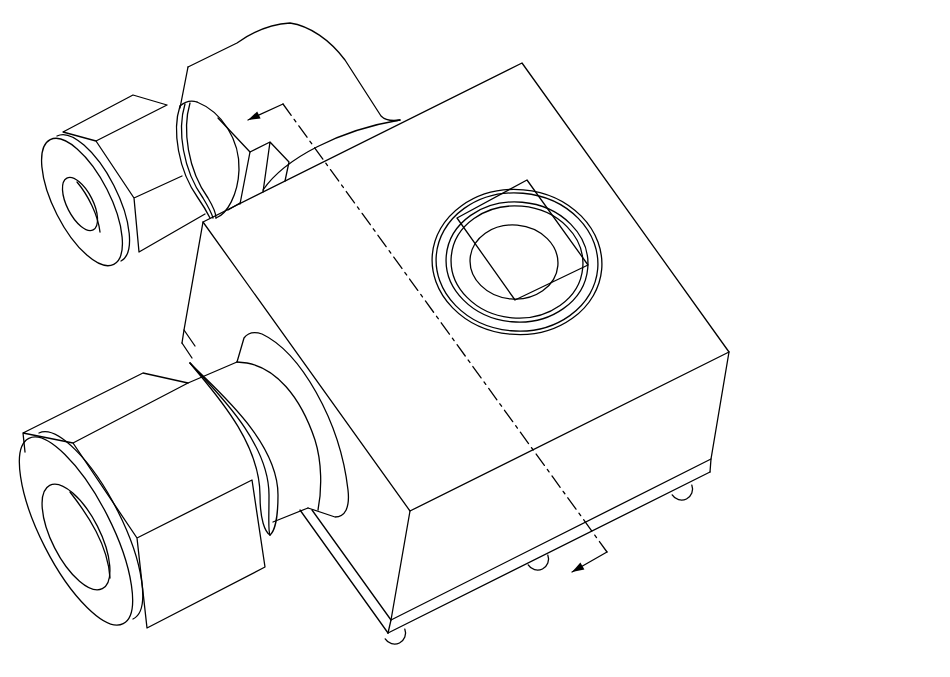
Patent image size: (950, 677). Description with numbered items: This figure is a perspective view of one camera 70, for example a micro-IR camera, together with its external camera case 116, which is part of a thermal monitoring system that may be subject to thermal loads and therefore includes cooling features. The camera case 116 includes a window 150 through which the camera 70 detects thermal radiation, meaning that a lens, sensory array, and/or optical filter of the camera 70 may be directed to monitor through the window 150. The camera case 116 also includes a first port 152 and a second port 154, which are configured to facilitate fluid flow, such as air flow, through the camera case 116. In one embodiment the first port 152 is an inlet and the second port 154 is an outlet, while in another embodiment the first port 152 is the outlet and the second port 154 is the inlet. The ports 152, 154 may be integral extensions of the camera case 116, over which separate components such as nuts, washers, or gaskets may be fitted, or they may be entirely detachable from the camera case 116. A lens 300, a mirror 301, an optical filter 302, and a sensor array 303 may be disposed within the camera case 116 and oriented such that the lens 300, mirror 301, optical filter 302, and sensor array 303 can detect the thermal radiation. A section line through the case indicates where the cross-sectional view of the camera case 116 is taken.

The camera 70 is at (496, 40).
The camera case 116 is at (538, 110).
The window 150 is at (543, 249).
The first port 152 is at (253, 53).
The second port 154 is at (88, 407).
The lens 300 is at (515, 248).
The mirror 301 is at (522, 240).
The optical filter 302 is at (522, 240).
The sensor array 303 is at (522, 240).